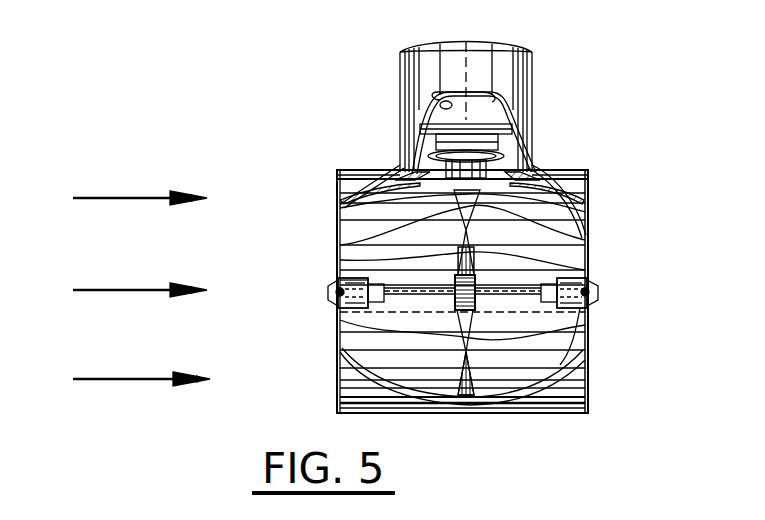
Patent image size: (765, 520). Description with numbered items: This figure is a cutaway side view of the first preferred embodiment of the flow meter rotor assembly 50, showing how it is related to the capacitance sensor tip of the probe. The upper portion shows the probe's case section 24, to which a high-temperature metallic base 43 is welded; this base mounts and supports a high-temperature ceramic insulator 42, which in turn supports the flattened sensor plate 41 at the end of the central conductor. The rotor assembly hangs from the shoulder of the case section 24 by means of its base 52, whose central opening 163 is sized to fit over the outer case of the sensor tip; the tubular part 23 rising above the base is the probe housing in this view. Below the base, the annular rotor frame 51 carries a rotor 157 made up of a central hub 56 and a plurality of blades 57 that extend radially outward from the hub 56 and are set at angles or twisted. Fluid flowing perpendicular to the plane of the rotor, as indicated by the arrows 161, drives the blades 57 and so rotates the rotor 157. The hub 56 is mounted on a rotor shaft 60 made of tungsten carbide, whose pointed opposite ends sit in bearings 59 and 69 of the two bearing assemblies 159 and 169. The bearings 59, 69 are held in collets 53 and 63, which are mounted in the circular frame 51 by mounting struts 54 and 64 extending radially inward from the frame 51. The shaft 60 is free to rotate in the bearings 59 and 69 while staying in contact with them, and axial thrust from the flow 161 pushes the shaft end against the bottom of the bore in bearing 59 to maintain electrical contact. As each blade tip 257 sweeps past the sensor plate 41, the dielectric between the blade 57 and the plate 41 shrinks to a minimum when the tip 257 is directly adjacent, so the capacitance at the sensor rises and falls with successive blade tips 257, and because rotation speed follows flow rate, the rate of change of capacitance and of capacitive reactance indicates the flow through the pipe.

The cylindrical housing 23 is at (532, 62).
The central opening 163 is at (448, 98).
The rotor assembly 50 is at (398, 145).
The base 52 is at (532, 122).
The rotor frame 51 is at (570, 170).
The case section 24 is at (400, 160).
The metallic base 43 is at (406, 166).
The ceramic insulator 42 is at (357, 197).
The blade tips 257 is at (565, 212).
The plate 41 is at (345, 242).
The blades 57 is at (540, 243).
The hub 56 is at (540, 268).
The bearing assembly 169 is at (353, 278).
The collet 63 is at (340, 285).
The mounting strut 64 is at (338, 293).
The bearing 69 is at (342, 308).
The bearing assembly 159 is at (603, 287).
The mounting strut 54 is at (575, 300).
The collet 53 is at (578, 342).
The bearing 59 is at (586, 345).
The rotor shaft 60 is at (586, 372).
The rotor 157 is at (452, 367).
The arrows 161 is at (123, 289).